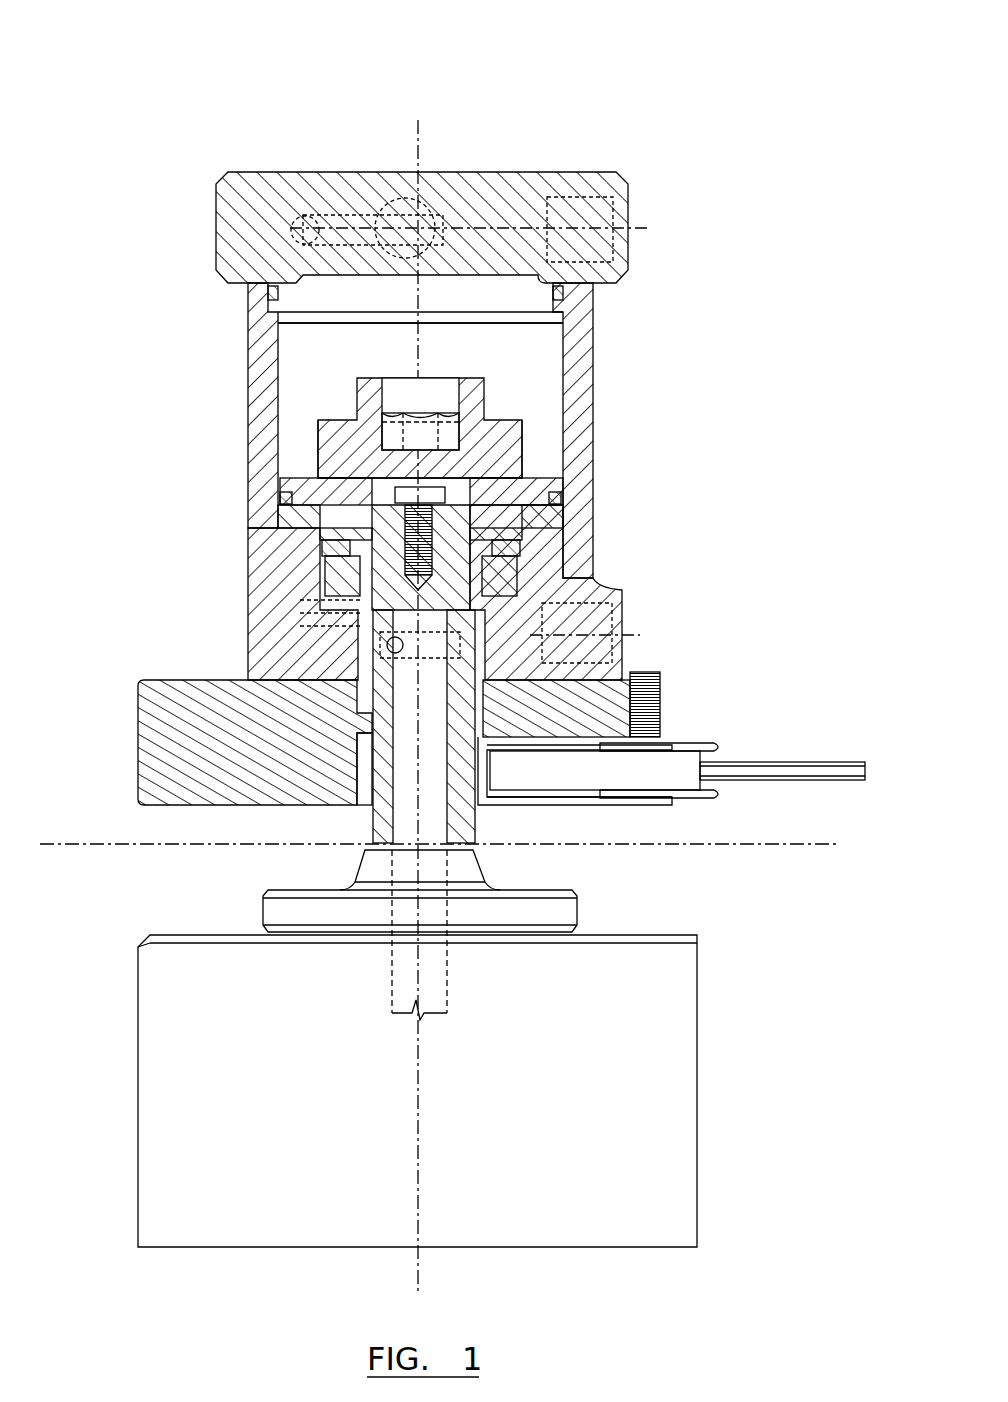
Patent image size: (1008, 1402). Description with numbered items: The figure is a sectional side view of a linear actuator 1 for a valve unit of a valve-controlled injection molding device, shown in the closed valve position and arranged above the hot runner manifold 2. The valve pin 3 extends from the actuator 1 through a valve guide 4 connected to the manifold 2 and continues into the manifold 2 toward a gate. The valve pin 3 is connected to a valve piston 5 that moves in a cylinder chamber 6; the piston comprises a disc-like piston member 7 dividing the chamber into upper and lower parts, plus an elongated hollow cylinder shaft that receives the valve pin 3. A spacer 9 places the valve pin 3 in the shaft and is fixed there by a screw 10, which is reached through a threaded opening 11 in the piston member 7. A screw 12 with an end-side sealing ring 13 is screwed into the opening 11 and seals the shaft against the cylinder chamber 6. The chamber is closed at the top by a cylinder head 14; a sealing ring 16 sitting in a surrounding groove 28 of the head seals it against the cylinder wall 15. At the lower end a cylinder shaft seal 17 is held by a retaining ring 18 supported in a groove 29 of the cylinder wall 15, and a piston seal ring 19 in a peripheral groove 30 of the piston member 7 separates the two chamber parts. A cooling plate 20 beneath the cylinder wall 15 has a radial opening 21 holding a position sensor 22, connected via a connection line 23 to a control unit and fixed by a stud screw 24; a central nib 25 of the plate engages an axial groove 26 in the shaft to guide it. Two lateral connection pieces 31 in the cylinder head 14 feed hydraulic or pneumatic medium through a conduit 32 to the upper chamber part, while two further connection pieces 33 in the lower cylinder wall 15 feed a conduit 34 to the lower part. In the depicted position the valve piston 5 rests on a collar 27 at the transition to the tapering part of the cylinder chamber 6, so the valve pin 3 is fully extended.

The linear actuator 1 is at (246, 130).
The hot runner manifold 2 is at (178, 1110).
The valve pin 3 is at (405, 815).
The valve guide 4 is at (555, 912).
The valve piston 5 is at (472, 751).
The cylinder chamber 6 is at (305, 360).
The disc-like piston member 7 is at (530, 500).
The spacer 9 is at (517, 557).
The screw 10 is at (525, 525).
The opening 11 is at (523, 433).
The screw 12 is at (488, 403).
The sealing ring 13 is at (530, 473).
The cylinder head 14 is at (232, 213).
The cylinder wall 15 is at (262, 402).
The sealing ring 16 is at (262, 300).
The cylinder shaft seal 17 is at (320, 596).
The retaining ring 18 is at (320, 530).
The piston seal ring 19 is at (300, 486).
The cooling plate 20 is at (160, 748).
The opening 21 is at (580, 797).
The position sensor 22 is at (712, 748).
The connection line 23 is at (820, 768).
The stud screw 24 is at (663, 700).
The nib 25 is at (424, 726).
The groove 26 is at (357, 785).
The collar 27 is at (530, 540).
The groove 28 is at (262, 298).
The groove 29 is at (335, 548).
The groove 30 is at (298, 520).
The connection pieces 31 is at (405, 172).
The conduit 32 is at (348, 178).
The connection pieces 33 is at (623, 652).
The conduit 34 is at (243, 617).